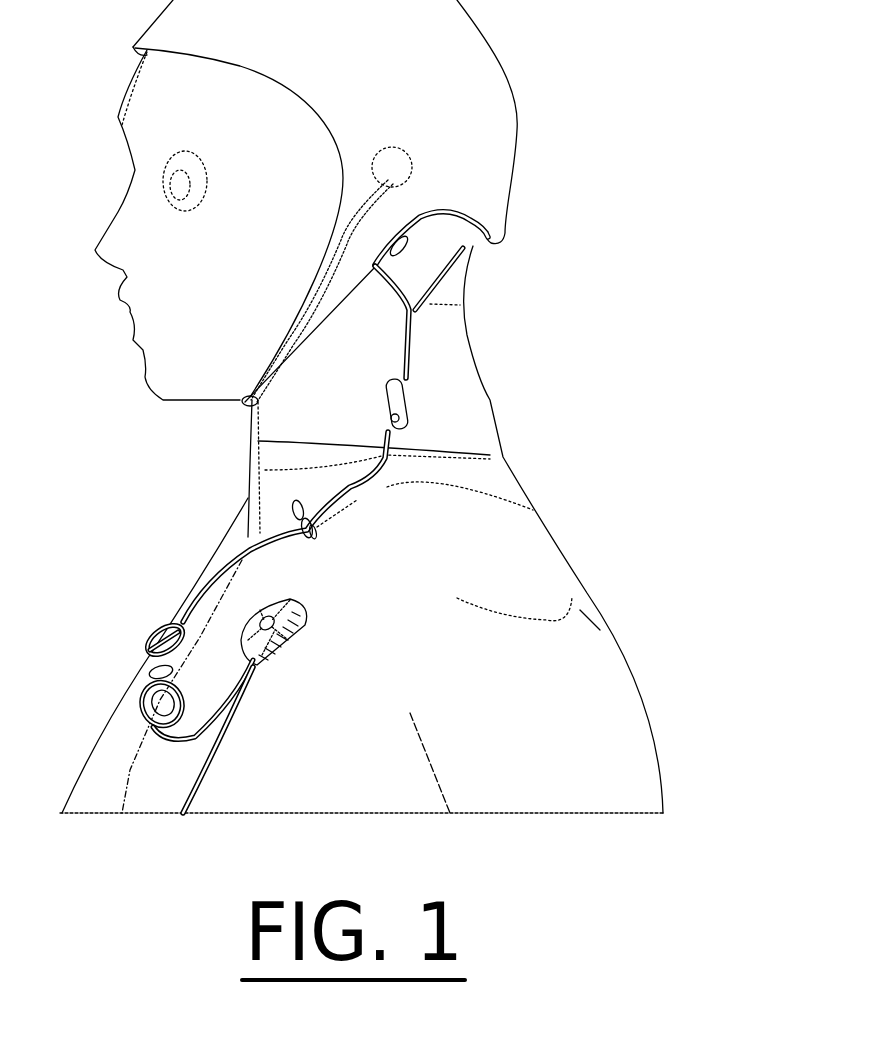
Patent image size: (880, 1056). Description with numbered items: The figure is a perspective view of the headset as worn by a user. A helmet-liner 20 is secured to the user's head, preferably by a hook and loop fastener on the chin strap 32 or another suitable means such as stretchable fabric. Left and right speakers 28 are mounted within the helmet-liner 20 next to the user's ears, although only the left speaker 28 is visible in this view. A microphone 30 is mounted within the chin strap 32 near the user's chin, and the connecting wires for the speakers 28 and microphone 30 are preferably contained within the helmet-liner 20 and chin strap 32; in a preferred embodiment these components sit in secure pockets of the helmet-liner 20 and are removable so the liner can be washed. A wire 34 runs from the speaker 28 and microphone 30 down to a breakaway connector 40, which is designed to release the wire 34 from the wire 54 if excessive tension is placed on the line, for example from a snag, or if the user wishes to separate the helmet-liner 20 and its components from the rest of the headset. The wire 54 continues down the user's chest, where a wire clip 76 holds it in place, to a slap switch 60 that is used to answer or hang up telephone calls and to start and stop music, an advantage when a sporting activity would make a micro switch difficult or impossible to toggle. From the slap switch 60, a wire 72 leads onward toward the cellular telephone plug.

The helmet-liner 20 is at (497, 48).
The speaker 28 is at (407, 170).
The microphone 30 is at (243, 407).
The chin strap 32 is at (318, 332).
The wire 34 is at (413, 320).
The breakaway connector 40 is at (398, 397).
The wire 54 is at (353, 483).
The slap switch 60 is at (280, 630).
The wire 72 is at (207, 757).
The wire clip 76 is at (310, 542).